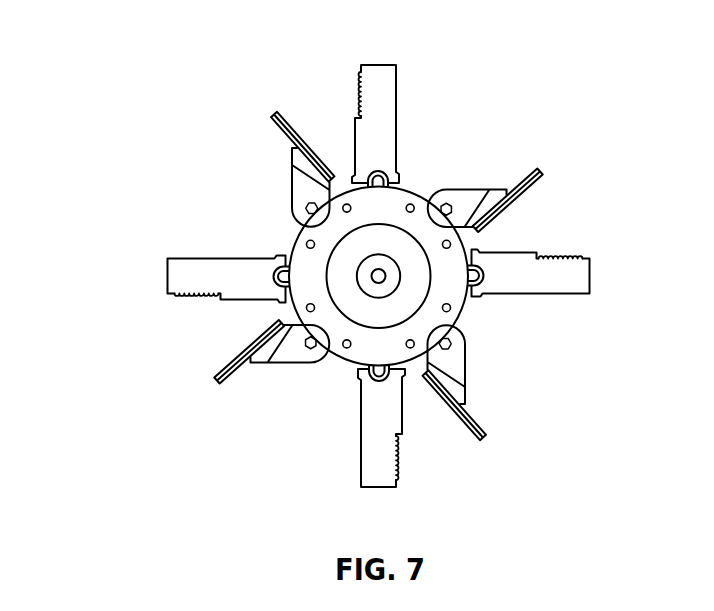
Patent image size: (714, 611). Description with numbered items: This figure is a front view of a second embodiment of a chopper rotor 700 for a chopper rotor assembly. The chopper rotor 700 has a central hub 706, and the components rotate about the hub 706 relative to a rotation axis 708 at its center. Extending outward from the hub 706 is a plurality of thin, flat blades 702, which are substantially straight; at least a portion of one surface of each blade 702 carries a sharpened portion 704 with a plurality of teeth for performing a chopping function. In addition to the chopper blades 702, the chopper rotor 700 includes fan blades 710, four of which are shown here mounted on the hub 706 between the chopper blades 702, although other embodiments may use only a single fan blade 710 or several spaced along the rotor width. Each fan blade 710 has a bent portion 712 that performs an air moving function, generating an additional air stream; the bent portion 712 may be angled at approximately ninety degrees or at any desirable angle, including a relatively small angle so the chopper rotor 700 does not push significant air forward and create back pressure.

The chopper rotor 700 is at (147, 70).
The blade 702 is at (373, 130).
The sharpened portion 704 is at (348, 76).
The hub 706 is at (417, 282).
The rotation axis 708 is at (378, 273).
The fan blade 710 is at (297, 188).
The bent portion 712 is at (303, 158).